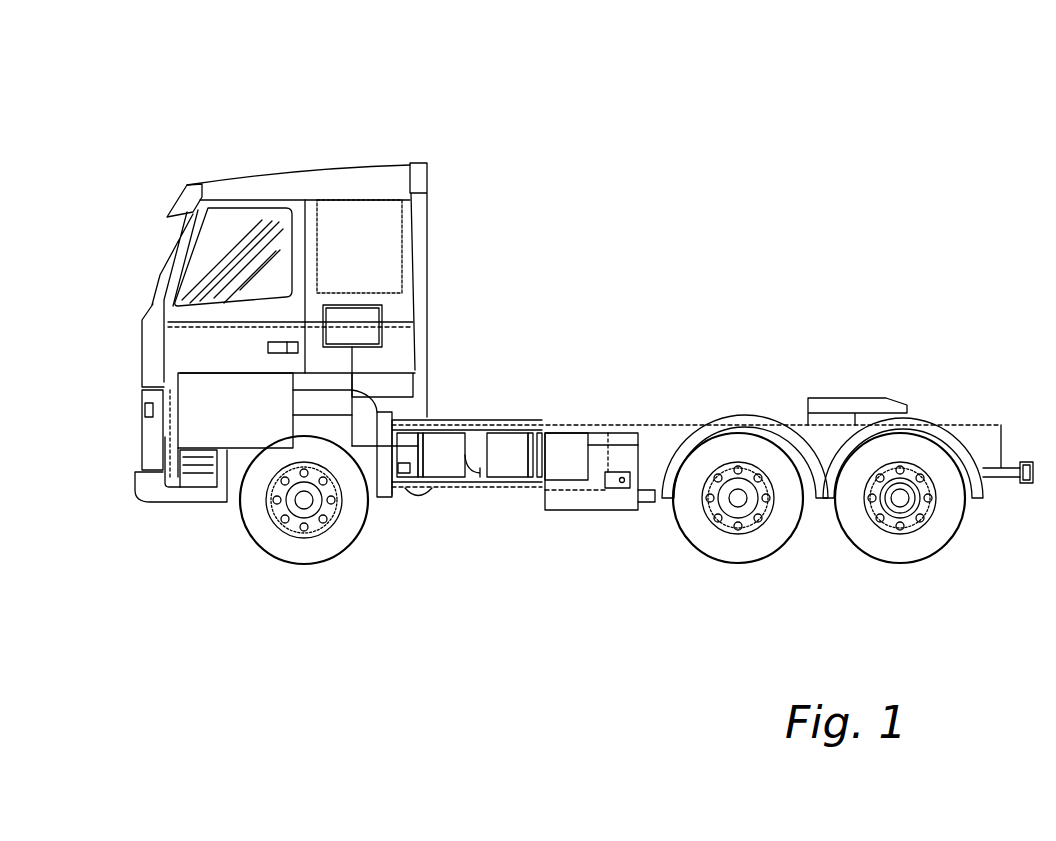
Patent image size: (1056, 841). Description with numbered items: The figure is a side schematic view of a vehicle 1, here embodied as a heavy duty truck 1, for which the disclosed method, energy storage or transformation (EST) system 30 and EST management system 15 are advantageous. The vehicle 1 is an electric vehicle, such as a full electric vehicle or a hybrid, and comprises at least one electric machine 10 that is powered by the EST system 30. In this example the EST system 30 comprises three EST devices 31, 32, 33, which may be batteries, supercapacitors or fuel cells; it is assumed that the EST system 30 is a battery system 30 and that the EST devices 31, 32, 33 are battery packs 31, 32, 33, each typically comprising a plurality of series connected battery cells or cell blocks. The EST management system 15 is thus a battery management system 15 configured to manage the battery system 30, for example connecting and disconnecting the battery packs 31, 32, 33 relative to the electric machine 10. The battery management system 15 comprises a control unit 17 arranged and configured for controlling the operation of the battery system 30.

The vehicle 1 is at (248, 101).
The electric machine 10 is at (205, 449).
The EST management system 15 is at (462, 367).
The control unit 17 is at (383, 310).
The EST system 30 is at (523, 393).
The EST device 31 is at (448, 478).
The EST device 32 is at (502, 478).
The EST device 33 is at (563, 480).